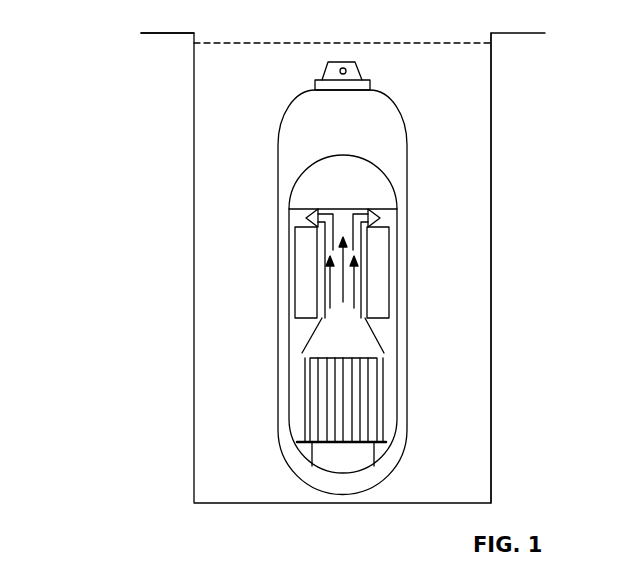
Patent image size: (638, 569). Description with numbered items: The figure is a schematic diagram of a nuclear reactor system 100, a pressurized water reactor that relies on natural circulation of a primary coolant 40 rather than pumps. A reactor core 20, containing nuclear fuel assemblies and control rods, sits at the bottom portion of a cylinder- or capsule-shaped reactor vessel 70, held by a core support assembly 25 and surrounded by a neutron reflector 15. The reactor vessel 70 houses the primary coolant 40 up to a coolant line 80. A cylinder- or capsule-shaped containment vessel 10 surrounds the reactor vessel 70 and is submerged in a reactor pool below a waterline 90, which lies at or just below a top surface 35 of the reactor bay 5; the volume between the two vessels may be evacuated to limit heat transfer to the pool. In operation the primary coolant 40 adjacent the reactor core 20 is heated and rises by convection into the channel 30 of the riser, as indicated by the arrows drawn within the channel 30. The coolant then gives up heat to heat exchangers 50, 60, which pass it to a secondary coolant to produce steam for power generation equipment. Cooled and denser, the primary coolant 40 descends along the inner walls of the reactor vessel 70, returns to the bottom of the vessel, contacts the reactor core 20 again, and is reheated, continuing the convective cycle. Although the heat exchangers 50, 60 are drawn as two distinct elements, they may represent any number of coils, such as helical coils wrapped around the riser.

The nuclear reactor system 100 is at (112, 44).
The reactor bay 5 is at (492, 243).
The containment vessel 10 is at (330, 490).
The neutron reflector 15 is at (303, 383).
The reactor core 20 is at (310, 406).
The core support assembly 25 is at (312, 452).
The channel 30 is at (356, 343).
The top surface 35 is at (178, 33).
The primary coolant 40 is at (343, 277).
The heat exchanger 50 is at (304, 266).
The heat exchanger 60 is at (380, 250).
The reactor vessel 70 is at (397, 413).
The coolant line 80 is at (329, 202).
The waterline 90 is at (440, 43).